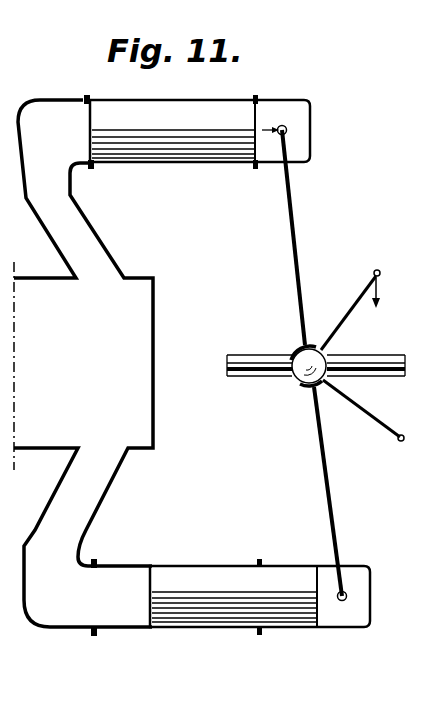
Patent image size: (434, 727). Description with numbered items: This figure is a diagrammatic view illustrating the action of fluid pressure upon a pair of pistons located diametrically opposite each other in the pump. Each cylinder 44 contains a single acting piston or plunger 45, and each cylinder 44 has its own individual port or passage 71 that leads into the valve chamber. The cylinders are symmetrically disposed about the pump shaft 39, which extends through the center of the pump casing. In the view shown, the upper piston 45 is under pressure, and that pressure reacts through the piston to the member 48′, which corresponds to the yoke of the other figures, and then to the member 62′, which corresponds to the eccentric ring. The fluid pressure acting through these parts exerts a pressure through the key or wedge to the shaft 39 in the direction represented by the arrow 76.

The cylinder 44 is at (125, 608).
The port or passage 71 is at (65, 223).
The piston or plunger 45 is at (175, 133).
The member 48′ is at (298, 226).
The pump shaft 39 is at (383, 362).
The member 62′ is at (350, 310).
The arrow 76 is at (378, 289).